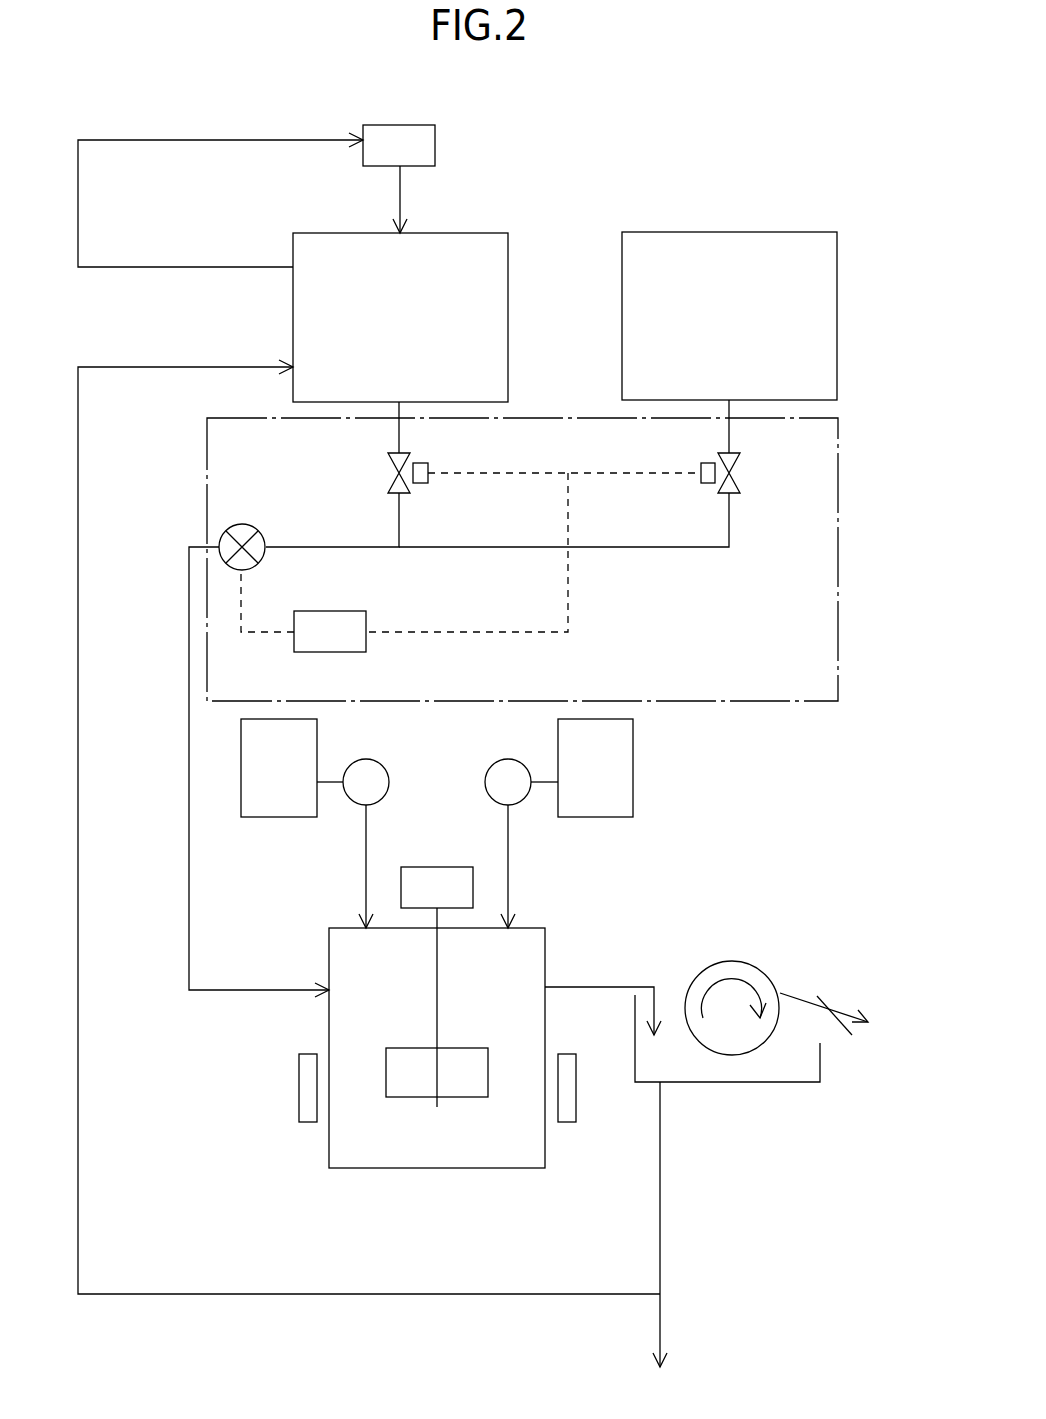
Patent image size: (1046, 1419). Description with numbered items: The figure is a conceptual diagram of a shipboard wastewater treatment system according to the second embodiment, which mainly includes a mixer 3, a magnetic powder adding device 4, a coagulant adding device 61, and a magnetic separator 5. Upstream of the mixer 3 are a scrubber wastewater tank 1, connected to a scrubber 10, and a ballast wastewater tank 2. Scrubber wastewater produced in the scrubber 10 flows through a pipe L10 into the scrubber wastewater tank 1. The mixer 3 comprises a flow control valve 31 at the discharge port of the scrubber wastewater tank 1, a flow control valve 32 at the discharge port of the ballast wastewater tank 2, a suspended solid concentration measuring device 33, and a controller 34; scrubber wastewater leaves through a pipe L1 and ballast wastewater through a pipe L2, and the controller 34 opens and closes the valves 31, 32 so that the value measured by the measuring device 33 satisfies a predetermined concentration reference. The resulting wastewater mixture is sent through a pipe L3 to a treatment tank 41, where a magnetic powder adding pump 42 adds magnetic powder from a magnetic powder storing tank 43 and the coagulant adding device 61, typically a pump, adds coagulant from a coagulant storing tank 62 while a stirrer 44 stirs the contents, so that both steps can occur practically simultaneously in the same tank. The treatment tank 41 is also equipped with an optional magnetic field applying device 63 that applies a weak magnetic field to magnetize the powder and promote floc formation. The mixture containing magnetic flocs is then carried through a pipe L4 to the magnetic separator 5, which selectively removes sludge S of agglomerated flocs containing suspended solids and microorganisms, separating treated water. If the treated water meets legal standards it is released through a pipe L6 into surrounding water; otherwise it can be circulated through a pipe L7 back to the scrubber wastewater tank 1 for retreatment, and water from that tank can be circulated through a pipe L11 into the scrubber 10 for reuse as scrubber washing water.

The scrubber wastewater tank 1 is at (293, 312).
The ballast wastewater tank 2 is at (622, 305).
The mixer 3 is at (838, 518).
The magnetic powder adding device 4 is at (283, 920).
The magnetic separator 5 is at (737, 1082).
The scrubber 10 is at (388, 125).
The flow control valve 31 is at (388, 473).
The flow control valve 32 is at (740, 473).
The suspended solid concentration measuring device 33 is at (232, 524).
The controller 34 is at (322, 652).
The treatment tank 41 is at (432, 1168).
The magnetic powder adding pump 42 is at (353, 803).
The magnetic powder storing tank 43 is at (317, 730).
The stirrer 44 is at (437, 867).
The coagulant adding device 61 is at (520, 803).
The coagulant storing tank 62 is at (633, 757).
The magnetic field applying device 63 is at (308, 1122).
The pipe L1 is at (399, 527).
The pipe L2 is at (645, 547).
The pipe L3 is at (189, 775).
The pipe L4 is at (587, 987).
The pipe L6 is at (662, 1320).
The pipe L7 is at (500, 1294).
The pipe L10 is at (400, 197).
The pipe L11 is at (78, 207).
The sludge S is at (843, 1010).